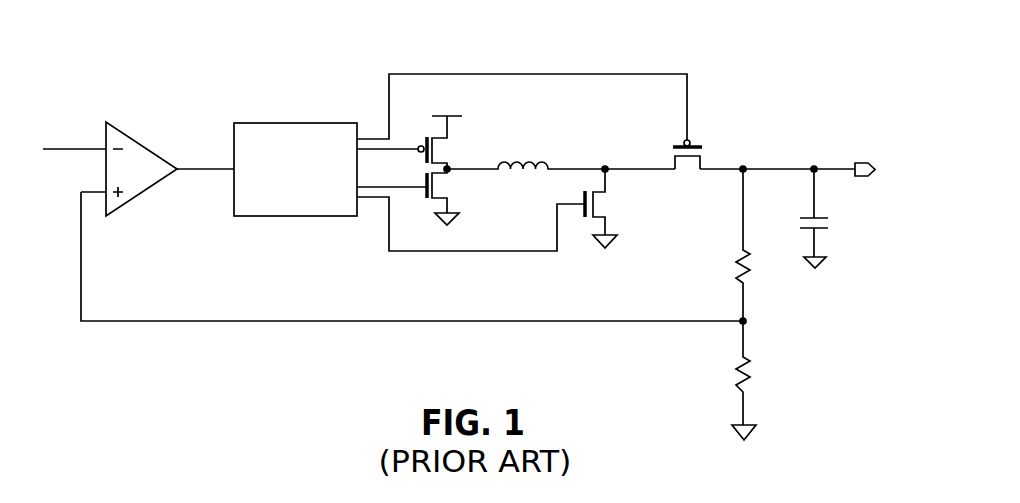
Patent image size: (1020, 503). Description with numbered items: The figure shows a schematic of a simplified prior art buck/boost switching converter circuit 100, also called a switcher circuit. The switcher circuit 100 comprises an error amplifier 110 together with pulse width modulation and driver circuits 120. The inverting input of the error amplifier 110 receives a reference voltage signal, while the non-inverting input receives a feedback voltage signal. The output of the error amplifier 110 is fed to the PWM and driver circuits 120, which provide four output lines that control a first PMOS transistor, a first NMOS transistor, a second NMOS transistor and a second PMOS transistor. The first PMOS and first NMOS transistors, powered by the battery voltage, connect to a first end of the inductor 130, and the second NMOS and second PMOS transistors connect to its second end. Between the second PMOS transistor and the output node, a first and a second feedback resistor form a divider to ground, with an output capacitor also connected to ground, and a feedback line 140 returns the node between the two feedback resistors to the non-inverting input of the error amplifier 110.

The buck/boost switching converter circuit 100 is at (779, 40).
The error amplifier 110 is at (143, 146).
The PWM and driver circuits 120 is at (332, 123).
The inductor 130 is at (532, 161).
The feedback line 140 is at (567, 320).